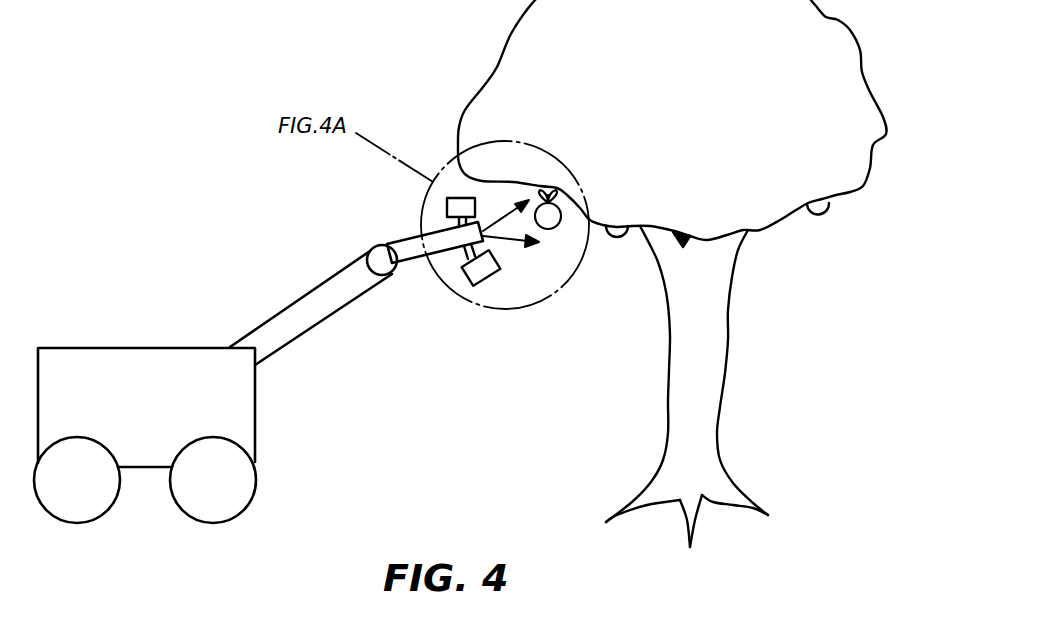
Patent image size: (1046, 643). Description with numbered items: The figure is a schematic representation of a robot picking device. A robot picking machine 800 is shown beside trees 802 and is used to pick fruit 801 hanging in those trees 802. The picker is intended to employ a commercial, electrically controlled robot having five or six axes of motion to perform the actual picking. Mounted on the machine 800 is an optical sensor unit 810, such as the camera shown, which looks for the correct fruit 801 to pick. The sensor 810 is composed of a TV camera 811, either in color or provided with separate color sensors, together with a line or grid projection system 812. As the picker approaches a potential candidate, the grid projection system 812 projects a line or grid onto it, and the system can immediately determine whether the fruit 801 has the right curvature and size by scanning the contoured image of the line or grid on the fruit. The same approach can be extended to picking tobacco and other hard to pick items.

The robot picking machine 800 is at (165, 416).
The optical sensor unit 810 is at (406, 241).
The TV camera 811 is at (488, 283).
The line or grid projection system 812 is at (458, 178).
The fruit 801 is at (559, 226).
The trees 802 is at (715, 365).